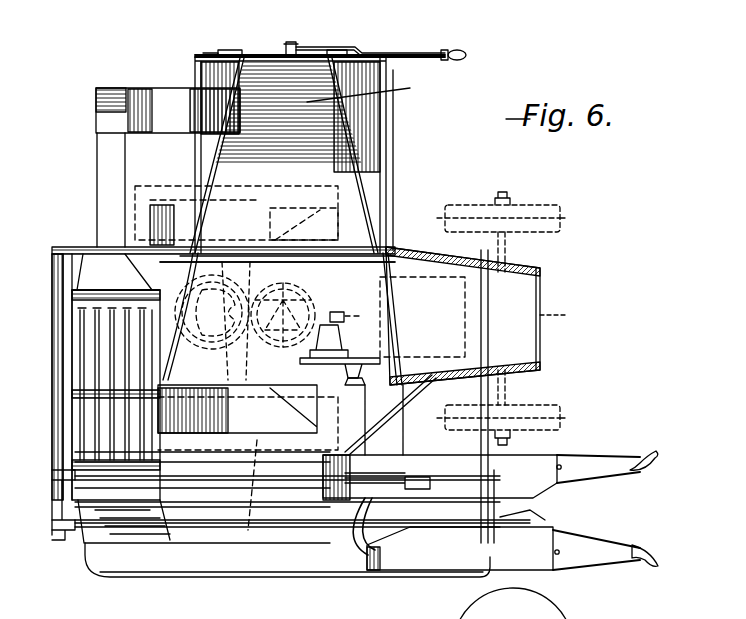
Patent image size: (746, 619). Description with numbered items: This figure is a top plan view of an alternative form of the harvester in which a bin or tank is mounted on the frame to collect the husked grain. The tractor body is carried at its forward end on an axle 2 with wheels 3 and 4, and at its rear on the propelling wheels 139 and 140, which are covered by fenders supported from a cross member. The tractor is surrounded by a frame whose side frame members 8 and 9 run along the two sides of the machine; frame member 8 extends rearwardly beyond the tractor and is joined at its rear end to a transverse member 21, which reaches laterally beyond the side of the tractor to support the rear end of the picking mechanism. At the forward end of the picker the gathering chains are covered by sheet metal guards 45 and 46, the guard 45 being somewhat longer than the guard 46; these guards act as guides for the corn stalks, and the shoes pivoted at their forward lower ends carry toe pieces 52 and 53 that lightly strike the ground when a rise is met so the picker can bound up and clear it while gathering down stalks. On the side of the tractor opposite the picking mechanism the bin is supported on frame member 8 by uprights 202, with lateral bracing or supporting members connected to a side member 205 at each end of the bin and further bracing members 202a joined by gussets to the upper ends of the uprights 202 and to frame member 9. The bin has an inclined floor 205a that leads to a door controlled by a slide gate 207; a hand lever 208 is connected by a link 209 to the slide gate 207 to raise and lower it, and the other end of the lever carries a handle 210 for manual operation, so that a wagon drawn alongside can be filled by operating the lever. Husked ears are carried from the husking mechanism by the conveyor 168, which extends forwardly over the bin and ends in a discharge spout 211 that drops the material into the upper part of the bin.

The axle 2 is at (512, 260).
The wheel 3 is at (560, 210).
The wheel 4 is at (562, 408).
The frame member 8 is at (420, 262).
The frame member 9 is at (378, 390).
The transverse member 21 is at (58, 367).
The guard 45 is at (533, 465).
The guard 46 is at (450, 565).
The toe piece 52 is at (648, 456).
The toe piece 53 is at (650, 566).
The tractor propelling wheel 139 is at (326, 196).
The tractor propelling wheel 140 is at (200, 535).
The conveyor 168 is at (97, 222).
The upright 202 is at (198, 248).
The bracing member 202a is at (222, 350).
The side member 205 is at (195, 156).
The inclined floor 205a is at (382, 91).
The slide gate 207 is at (260, 52).
The hand lever 208 is at (362, 30).
The link 209 is at (296, 44).
The handle 210 is at (460, 51).
The discharge spout 211 is at (258, 128).